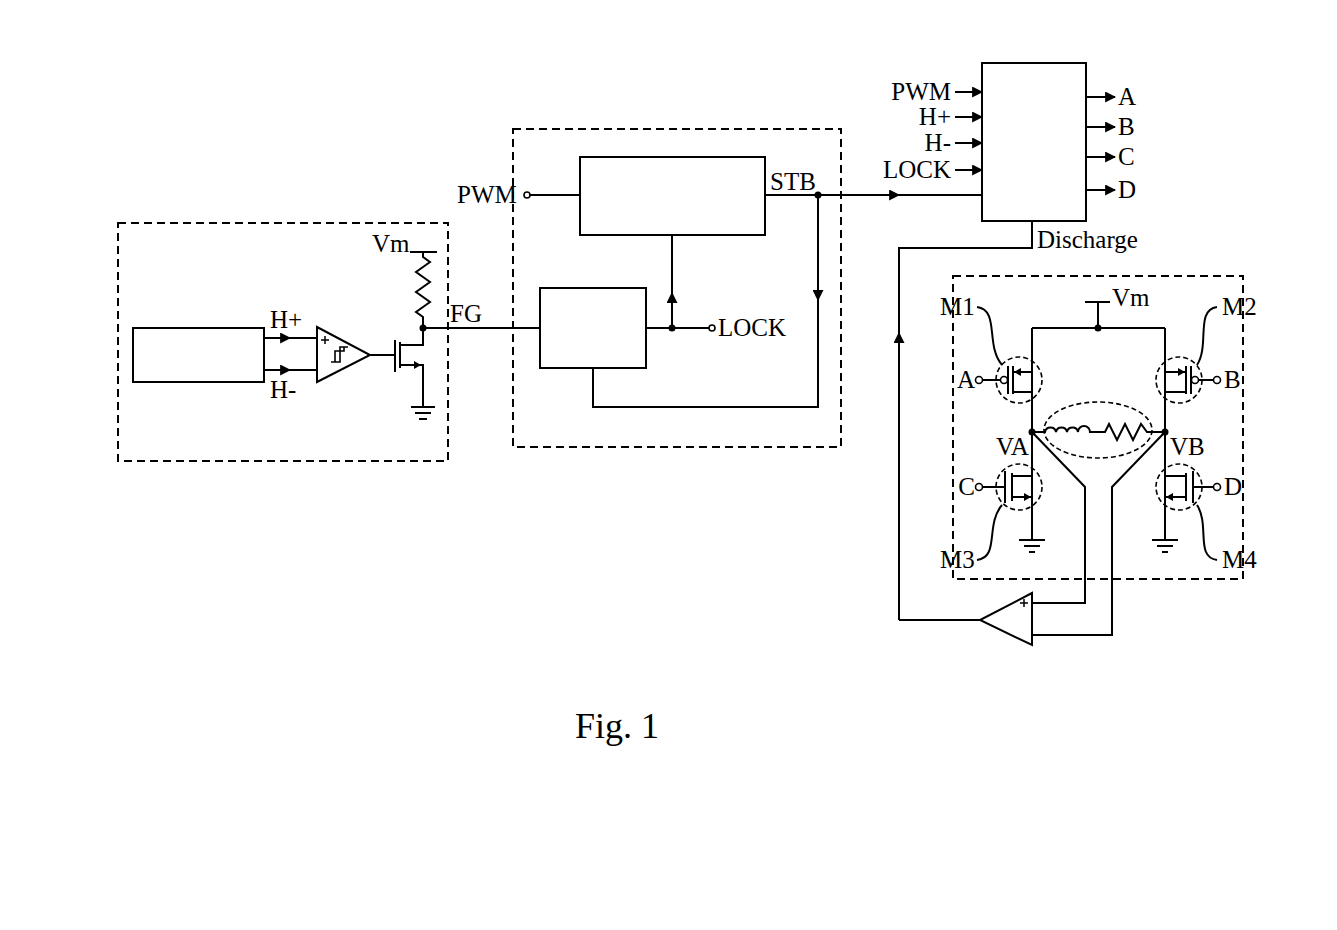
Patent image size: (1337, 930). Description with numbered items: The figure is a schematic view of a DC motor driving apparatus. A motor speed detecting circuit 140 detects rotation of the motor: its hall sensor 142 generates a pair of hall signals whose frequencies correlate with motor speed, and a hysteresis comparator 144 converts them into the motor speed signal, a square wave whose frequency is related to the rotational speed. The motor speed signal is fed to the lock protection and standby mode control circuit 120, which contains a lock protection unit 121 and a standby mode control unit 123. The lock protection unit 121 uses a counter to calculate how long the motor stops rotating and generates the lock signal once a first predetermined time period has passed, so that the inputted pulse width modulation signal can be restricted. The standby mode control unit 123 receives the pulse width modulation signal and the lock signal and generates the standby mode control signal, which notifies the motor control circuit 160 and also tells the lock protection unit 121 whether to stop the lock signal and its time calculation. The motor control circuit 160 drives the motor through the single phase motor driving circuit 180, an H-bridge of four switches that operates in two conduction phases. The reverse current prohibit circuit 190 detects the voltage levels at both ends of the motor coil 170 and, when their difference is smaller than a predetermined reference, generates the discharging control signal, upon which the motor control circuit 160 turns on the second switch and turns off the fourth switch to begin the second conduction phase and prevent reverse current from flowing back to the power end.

The lock protection and standby mode control circuit 120 is at (782, 129).
The lock protection unit 121 is at (565, 368).
The standby mode control unit 123 is at (632, 157).
The motor speed detecting circuit 140 is at (170, 223).
The hall sensor 142 is at (168, 328).
The hysteresis comparator 144 is at (334, 328).
The motor control circuit 160 is at (1060, 63).
The motor coil 170 is at (1067, 405).
The single phase motor driving circuit 180 is at (1215, 276).
The reverse current prohibit circuit 190 is at (1005, 637).